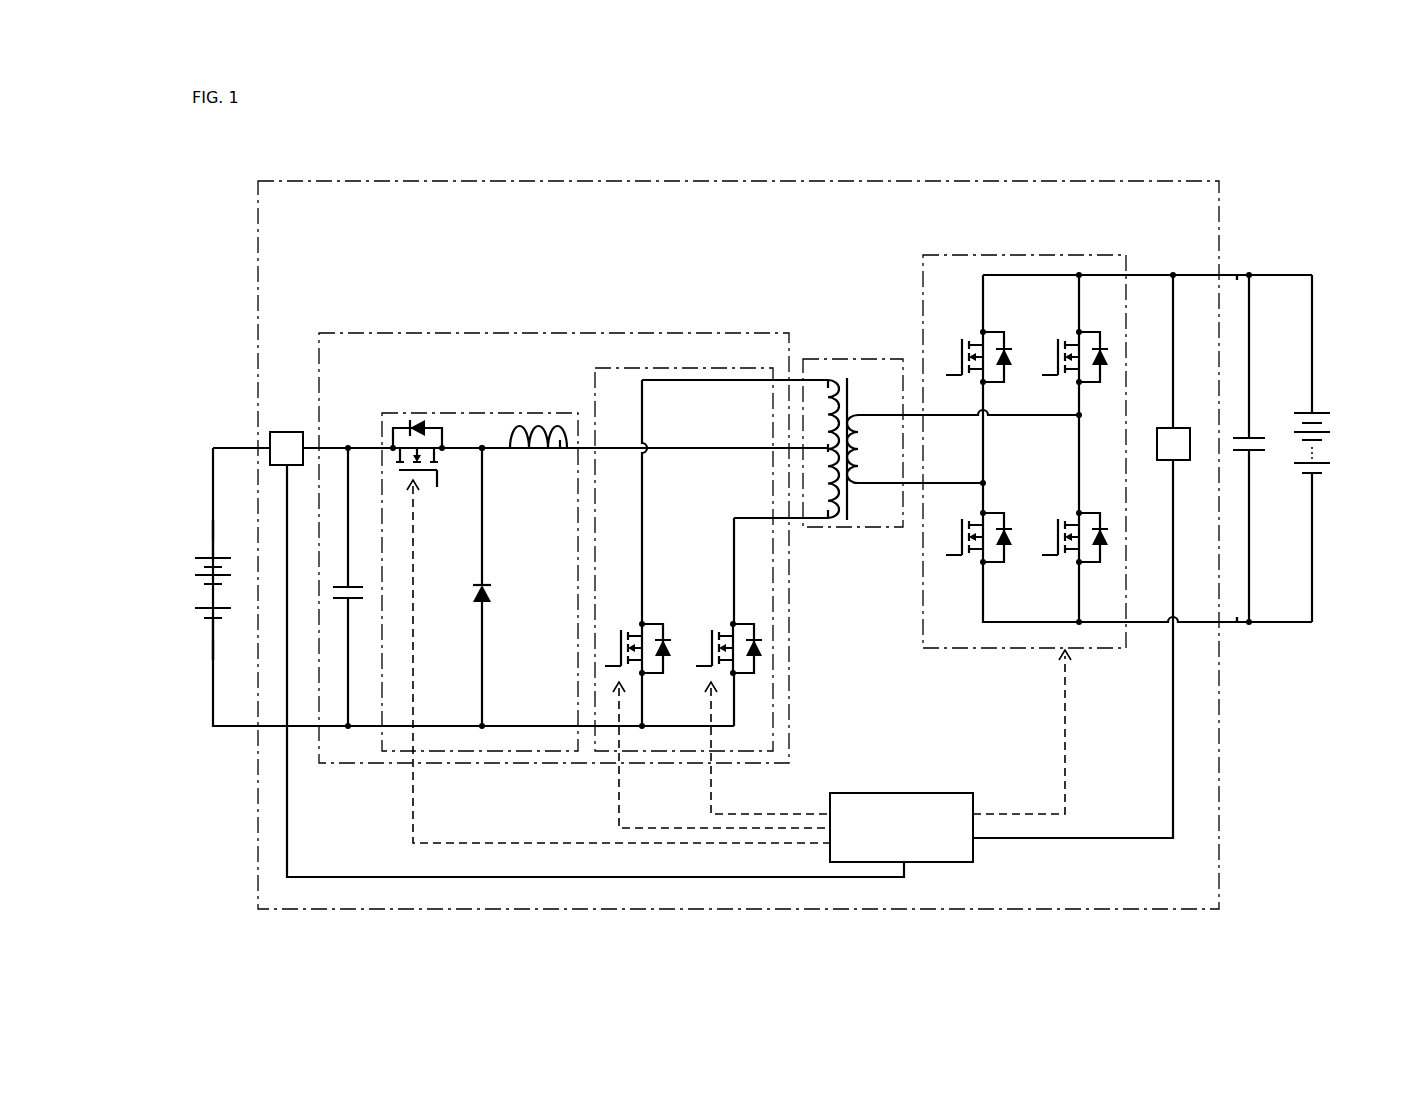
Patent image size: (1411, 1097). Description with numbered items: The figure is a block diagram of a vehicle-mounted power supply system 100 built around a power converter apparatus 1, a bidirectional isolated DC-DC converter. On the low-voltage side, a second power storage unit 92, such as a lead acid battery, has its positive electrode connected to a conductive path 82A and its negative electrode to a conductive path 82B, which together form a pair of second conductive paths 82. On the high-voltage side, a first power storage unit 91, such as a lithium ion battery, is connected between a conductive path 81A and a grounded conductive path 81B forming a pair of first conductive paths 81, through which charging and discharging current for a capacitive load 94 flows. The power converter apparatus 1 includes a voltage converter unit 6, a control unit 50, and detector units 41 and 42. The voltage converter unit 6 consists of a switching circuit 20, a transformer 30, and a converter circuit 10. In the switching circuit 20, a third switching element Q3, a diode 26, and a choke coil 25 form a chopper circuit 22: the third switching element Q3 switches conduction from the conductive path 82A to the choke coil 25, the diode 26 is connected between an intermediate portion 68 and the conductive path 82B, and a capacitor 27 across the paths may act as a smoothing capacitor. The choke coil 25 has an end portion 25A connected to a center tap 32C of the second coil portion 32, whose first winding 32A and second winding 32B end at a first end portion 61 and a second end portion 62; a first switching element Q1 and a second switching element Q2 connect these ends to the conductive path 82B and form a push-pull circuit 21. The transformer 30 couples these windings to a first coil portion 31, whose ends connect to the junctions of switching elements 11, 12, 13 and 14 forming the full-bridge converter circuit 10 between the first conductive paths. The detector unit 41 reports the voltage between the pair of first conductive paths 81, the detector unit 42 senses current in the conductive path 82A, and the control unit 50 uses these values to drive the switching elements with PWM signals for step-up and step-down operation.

The power converter apparatus 1 is at (1148, 181).
The power supply system 100 is at (1326, 193).
The voltage converter unit 6 is at (810, 236).
The switching circuit 20 is at (728, 332).
The transformer 30 is at (861, 359).
The converter circuit 10 is at (923, 287).
The switching element 11 is at (981, 335).
The switching element 12 is at (974, 562).
The switching element 13 is at (1077, 335).
The switching element 14 is at (1070, 562).
The push-pull circuit 21 is at (595, 400).
The chopper circuit 22 is at (442, 413).
The choke coil 25 is at (530, 426).
The end portion of the choke coil 25A is at (562, 456).
The diode 26 is at (492, 596).
The capacitor 27 is at (352, 587).
The intermediate portion 68 is at (482, 446).
The first switching element Q1 is at (640, 626).
The second switching element Q2 is at (731, 626).
The third switching element Q3 is at (437, 486).
The first coil portion 31 is at (858, 415).
The second coil portion 32 is at (846, 508).
The first winding 32A is at (828, 380).
The second winding 32B is at (828, 519).
The center tap 32C is at (826, 449).
The first end portion 61 is at (827, 384).
The second end portion 62 is at (827, 517).
The detector unit 41 is at (1178, 428).
The detector unit 42 is at (287, 432).
The control unit 50 is at (940, 793).
The pair of first conductive paths 81 is at (1370, 242).
The conductive path 81A is at (1237, 275).
The conductive path 81B is at (1237, 622).
The pair of second conductive paths 82 is at (135, 554).
The conductive path 82A is at (213, 520).
The conductive path 82B is at (213, 660).
The first power storage unit 91 is at (1306, 413).
The second power storage unit 92 is at (215, 556).
The capacitive load 94 is at (1255, 452).